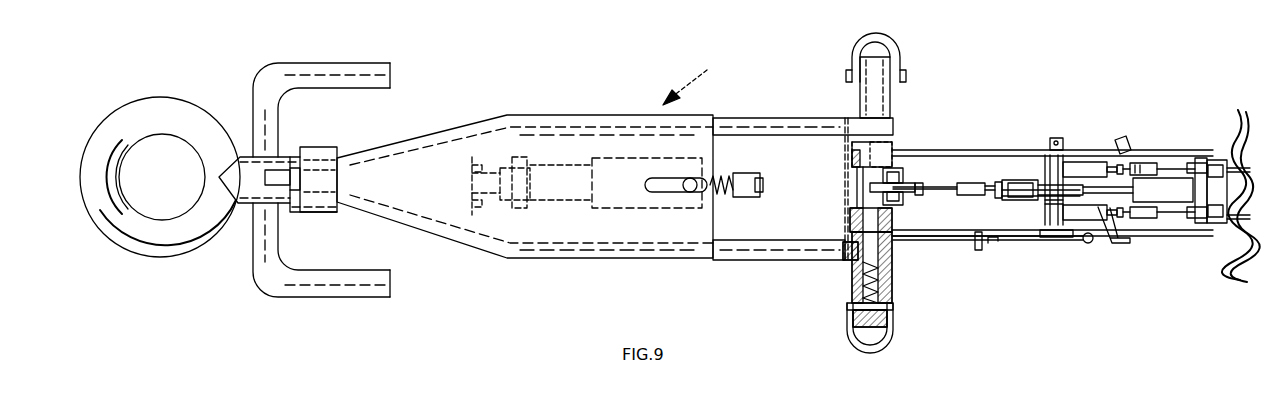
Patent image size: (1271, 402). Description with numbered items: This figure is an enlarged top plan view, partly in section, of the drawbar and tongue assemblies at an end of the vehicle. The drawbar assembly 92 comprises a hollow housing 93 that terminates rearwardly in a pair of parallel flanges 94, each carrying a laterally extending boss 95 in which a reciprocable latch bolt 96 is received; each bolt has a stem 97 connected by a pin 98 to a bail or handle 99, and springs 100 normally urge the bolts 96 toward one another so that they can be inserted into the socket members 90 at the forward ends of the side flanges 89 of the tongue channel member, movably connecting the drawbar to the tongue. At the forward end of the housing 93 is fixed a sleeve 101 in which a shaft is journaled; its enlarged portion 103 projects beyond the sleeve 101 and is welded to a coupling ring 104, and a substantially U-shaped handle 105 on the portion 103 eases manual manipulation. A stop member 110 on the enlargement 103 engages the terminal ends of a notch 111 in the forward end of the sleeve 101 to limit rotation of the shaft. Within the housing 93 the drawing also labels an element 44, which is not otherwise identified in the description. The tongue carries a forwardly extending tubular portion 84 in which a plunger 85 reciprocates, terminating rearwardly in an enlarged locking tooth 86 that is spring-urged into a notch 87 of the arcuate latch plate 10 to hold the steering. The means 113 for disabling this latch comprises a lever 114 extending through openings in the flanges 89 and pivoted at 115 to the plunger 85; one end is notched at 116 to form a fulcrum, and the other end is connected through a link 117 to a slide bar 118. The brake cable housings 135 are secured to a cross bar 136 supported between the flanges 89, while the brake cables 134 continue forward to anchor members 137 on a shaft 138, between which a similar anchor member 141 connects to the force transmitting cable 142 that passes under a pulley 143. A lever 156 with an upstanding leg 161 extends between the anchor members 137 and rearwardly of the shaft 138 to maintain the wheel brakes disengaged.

The latch plate 10 is at (1232, 113).
The valve 44 is at (750, 178).
The tubular portion 84 is at (1172, 185).
The plunger 85 is at (1130, 182).
The locking tooth 86 is at (1237, 205).
The notch 87 is at (1236, 181).
The side flanges 89 is at (998, 148).
The socket member 90 is at (893, 152).
The drawbar assembly 92 is at (695, 80).
The hollow housing 93 is at (572, 258).
The parallel flanges 94 is at (788, 120).
The boss 95 is at (892, 90).
The latch bolt 96 is at (853, 155).
The stem 97 is at (893, 327).
The pin 98 is at (893, 307).
The bail or handle 99 is at (895, 35).
The springs 100 is at (860, 285).
The sleeve 101 is at (317, 197).
The enlarged portion 103 is at (282, 160).
The coupling ring 104 is at (160, 102).
The U-shaped handle 105 is at (310, 68).
The stop member 110 is at (263, 173).
The notch 111 is at (300, 150).
The means for disabling the steering latch mechanism 113 is at (1102, 140).
The lever 114 is at (1123, 142).
The pivot 115 is at (1125, 225).
The notch 116 is at (1140, 165).
The link 117 is at (1037, 243).
The slide bar 118 is at (968, 245).
The brake cables 134 is at (1236, 170).
The brake cable housings 135 is at (1208, 160).
The cross bar 136 is at (1205, 222).
The anchor members 137 is at (1075, 165).
The shaft 138 is at (1058, 138).
The anchor member 141 is at (1030, 180).
The force transmitting cable 142 is at (930, 190).
The pulley 143 is at (913, 187).
The lever 156 is at (1050, 205).
The upstanding leg 161 is at (1002, 203).